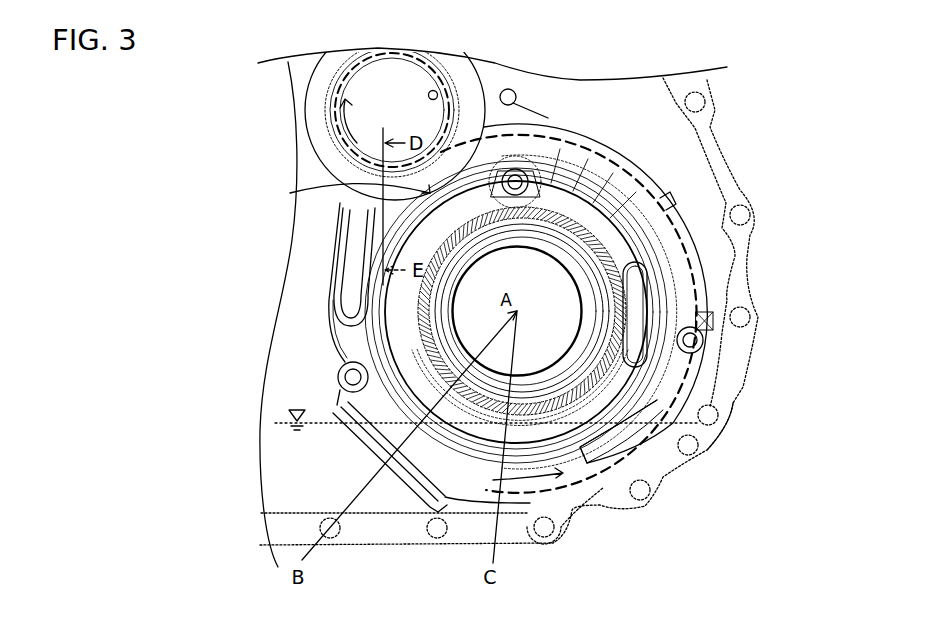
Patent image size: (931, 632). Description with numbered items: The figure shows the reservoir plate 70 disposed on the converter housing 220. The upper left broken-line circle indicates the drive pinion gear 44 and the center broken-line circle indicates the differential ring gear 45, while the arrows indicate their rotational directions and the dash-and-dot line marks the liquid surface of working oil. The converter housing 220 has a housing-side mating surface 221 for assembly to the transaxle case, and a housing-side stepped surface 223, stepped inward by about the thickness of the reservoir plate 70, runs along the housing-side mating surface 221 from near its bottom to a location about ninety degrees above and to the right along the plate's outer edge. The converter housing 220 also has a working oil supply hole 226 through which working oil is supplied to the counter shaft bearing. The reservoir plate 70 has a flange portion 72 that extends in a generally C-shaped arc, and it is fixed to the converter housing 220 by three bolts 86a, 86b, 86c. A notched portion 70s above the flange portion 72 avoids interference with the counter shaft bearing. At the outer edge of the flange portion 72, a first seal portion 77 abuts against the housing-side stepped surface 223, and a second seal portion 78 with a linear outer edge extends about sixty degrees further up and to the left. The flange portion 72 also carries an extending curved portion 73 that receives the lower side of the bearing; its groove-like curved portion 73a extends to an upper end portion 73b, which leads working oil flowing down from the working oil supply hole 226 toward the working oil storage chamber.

The drive pinion gear 44 is at (318, 118).
The differential ring gear 45 is at (700, 255).
The reservoir plate 70 is at (653, 167).
The notched portion 70s is at (345, 200).
The flange portion 72 is at (345, 345).
The extending curved portion 73 is at (330, 232).
The groove-like curved portion 73a is at (362, 248).
The upper end portion 73b is at (348, 222).
The first seal portion 77 is at (593, 497).
The second seal portion 78 is at (372, 448).
The bolt 86a is at (515, 182).
The bolt 86b is at (707, 333).
The bolt 86c is at (345, 393).
The converter housing 220 is at (690, 480).
The housing-side mating surface 221 is at (617, 497).
The housing-side stepped surface 223 is at (583, 492).
The working oil supply hole 226 is at (433, 90).